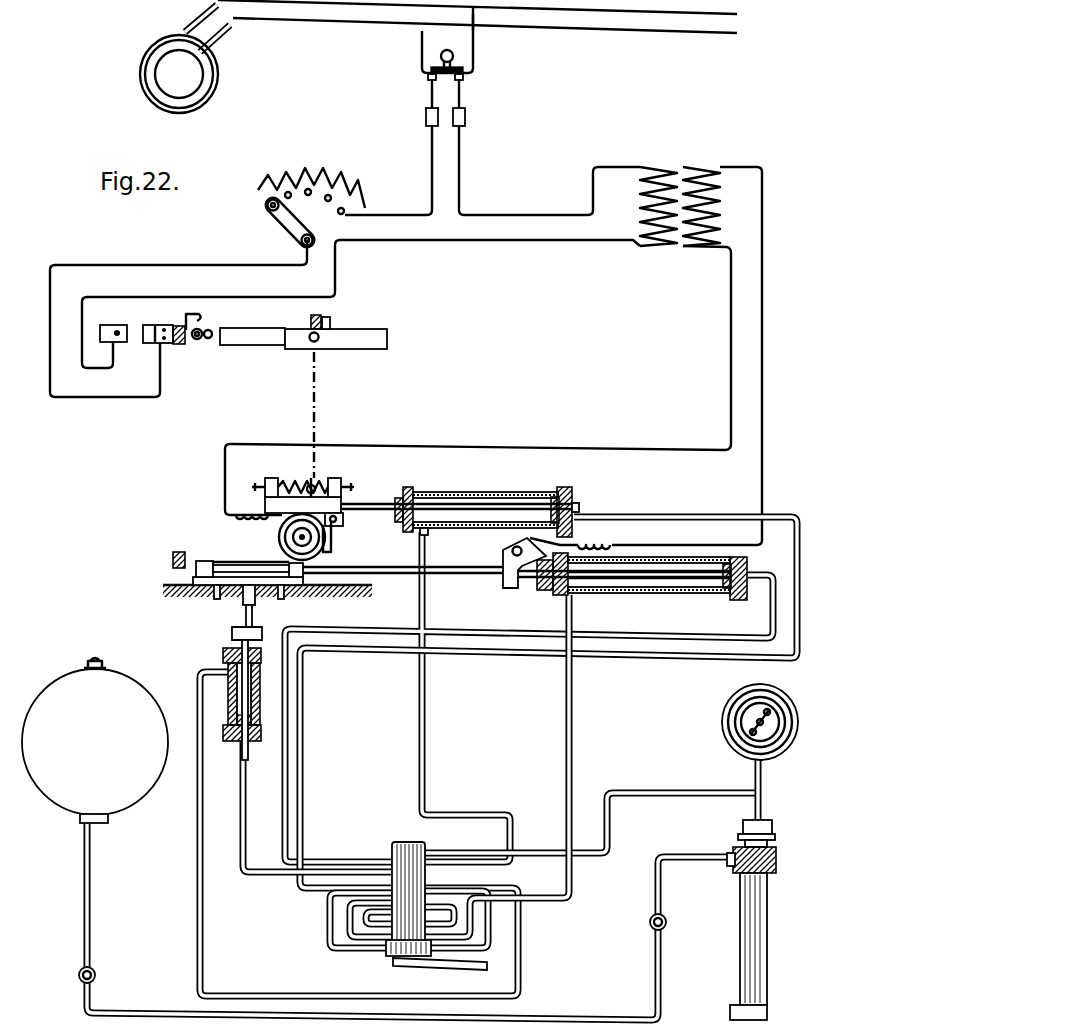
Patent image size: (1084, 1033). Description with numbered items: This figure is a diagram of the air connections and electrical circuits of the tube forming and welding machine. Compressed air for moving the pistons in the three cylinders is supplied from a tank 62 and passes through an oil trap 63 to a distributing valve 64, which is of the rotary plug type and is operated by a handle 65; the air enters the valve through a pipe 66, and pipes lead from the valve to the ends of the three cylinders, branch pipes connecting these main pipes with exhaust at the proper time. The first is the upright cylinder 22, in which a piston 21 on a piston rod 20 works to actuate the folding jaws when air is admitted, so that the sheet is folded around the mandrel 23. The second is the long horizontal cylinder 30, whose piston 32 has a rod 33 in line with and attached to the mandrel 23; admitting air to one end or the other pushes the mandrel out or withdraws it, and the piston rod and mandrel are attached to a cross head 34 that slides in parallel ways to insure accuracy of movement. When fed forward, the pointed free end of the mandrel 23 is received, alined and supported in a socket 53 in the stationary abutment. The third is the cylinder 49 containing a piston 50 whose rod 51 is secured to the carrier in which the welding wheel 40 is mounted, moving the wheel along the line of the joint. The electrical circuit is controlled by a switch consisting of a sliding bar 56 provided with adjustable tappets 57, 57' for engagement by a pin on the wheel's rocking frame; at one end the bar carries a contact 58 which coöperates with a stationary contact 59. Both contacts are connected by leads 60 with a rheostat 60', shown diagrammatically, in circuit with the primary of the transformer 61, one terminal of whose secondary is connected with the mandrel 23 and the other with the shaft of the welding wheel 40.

The piston rod 20 is at (249, 690).
The piston 21 is at (233, 728).
The upright cylinder 22 is at (228, 705).
The mandrel 23 is at (404, 566).
The long horizontal cylinder 30 is at (632, 594).
The piston 32 is at (749, 566).
The piston rod 33 is at (683, 587).
The cross head 34 is at (510, 586).
The welding wheel 40 is at (285, 540).
The cylinder 49 is at (452, 492).
The piston 50 is at (576, 505).
The piston rod 51 is at (500, 510).
The socket 53 is at (189, 560).
The sliding bar 56 is at (248, 346).
The adjustable tappet 57 is at (207, 317).
The adjustable tappet 57' is at (341, 320).
The contact 58 is at (160, 325).
The stationary contact 59 is at (117, 324).
The leads 60 is at (345, 318).
The rheostat 60' is at (311, 193).
The transformer 61 is at (680, 193).
The tank 62 is at (95, 740).
The oil trap 63 is at (740, 914).
The distributing valve 64 is at (405, 847).
The handle 65 is at (450, 964).
The pipe 66 is at (535, 853).